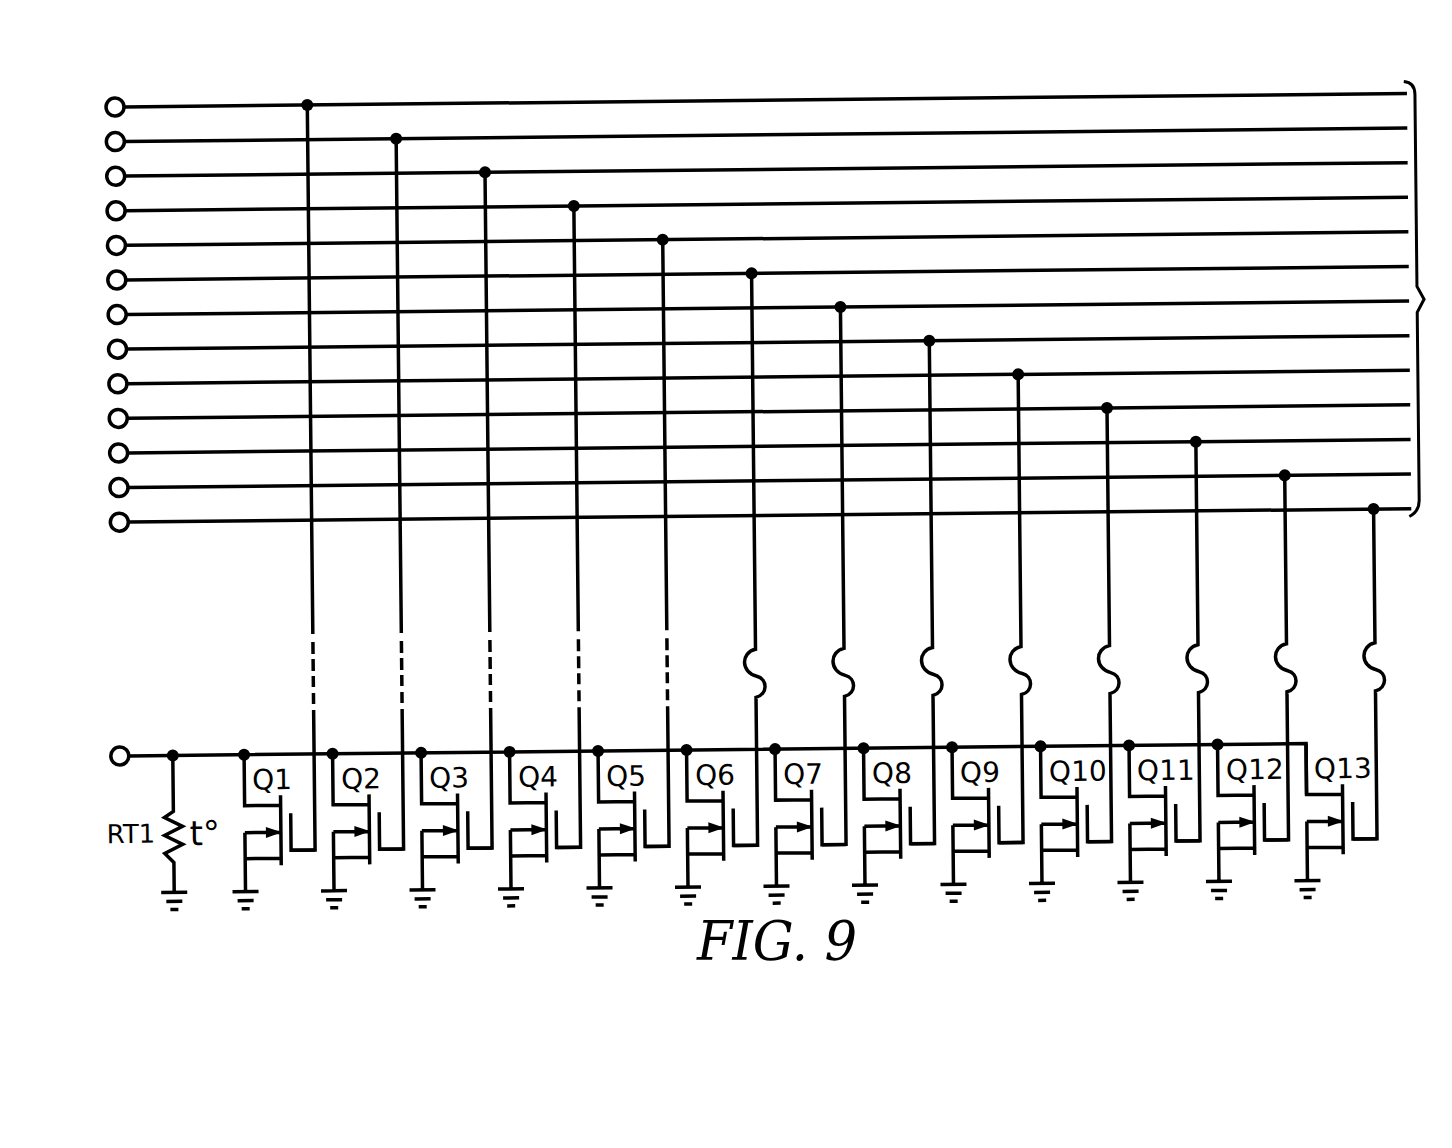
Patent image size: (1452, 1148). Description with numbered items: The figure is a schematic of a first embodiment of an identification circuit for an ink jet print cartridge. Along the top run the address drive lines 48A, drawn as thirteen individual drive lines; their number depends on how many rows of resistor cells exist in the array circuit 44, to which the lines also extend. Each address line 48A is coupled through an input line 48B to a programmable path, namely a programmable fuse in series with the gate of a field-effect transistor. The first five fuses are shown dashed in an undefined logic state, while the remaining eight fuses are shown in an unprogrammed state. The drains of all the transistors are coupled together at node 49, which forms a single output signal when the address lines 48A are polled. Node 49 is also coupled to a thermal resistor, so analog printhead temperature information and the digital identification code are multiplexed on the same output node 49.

The array circuit 44 is at (1428, 299).
The address drive lines 48A is at (243, 540).
The input lines 48B is at (283, 668).
The node 49 is at (137, 752).